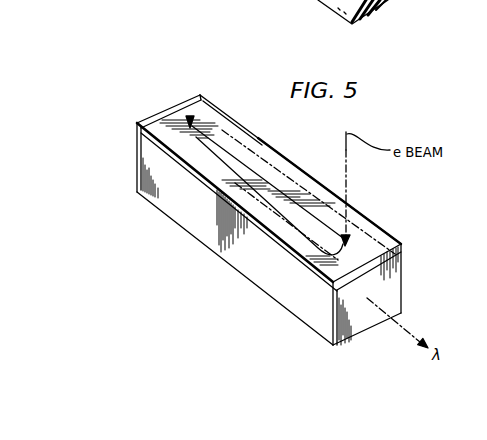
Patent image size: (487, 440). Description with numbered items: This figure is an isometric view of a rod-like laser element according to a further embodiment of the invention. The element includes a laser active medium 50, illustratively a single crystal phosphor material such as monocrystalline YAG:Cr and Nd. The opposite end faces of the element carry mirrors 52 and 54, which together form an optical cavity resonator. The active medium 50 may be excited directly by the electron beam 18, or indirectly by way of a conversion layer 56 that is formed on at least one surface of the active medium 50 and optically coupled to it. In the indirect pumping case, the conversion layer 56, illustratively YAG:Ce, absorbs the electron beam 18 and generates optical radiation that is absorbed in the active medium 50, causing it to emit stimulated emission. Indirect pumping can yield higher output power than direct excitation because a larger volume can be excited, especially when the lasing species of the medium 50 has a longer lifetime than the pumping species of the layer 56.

The electron beam 18 is at (190, 118).
The laser active medium 50 is at (295, 301).
The mirror 52 is at (136, 158).
The mirror 54 is at (390, 297).
The conversion layer 56 is at (209, 194).